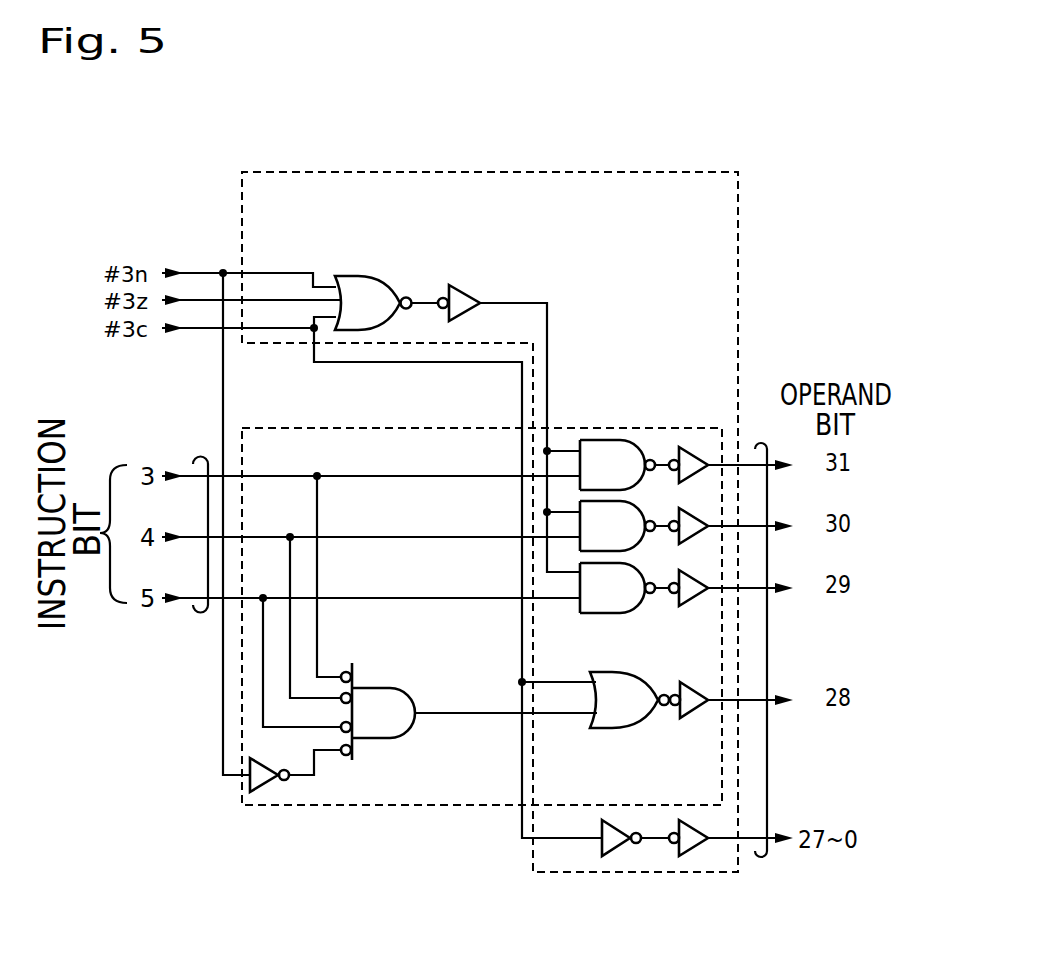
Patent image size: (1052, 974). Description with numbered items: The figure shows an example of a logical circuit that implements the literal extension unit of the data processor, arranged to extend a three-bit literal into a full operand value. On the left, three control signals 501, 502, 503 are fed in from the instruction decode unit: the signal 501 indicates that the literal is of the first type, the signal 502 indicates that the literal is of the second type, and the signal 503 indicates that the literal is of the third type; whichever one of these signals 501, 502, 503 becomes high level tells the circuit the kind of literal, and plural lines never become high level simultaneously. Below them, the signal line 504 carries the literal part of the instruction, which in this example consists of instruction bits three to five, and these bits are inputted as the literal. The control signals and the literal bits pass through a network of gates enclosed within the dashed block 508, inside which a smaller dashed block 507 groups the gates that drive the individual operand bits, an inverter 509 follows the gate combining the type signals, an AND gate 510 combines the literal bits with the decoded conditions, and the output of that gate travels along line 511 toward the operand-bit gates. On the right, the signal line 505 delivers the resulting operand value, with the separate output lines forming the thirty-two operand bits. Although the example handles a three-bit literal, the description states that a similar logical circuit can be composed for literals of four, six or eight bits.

The control signal 501 is at (263, 273).
The control signal 502 is at (292, 298).
The control signal 503 is at (328, 363).
The signal line 504 is at (196, 610).
The signal line 505 is at (760, 856).
The decode circuit 507 is at (632, 428).
The operand generation circuit 508 is at (538, 170).
The inverter 509 is at (390, 281).
The AND gate 510 is at (398, 695).
The AND gate output line 511 is at (450, 715).